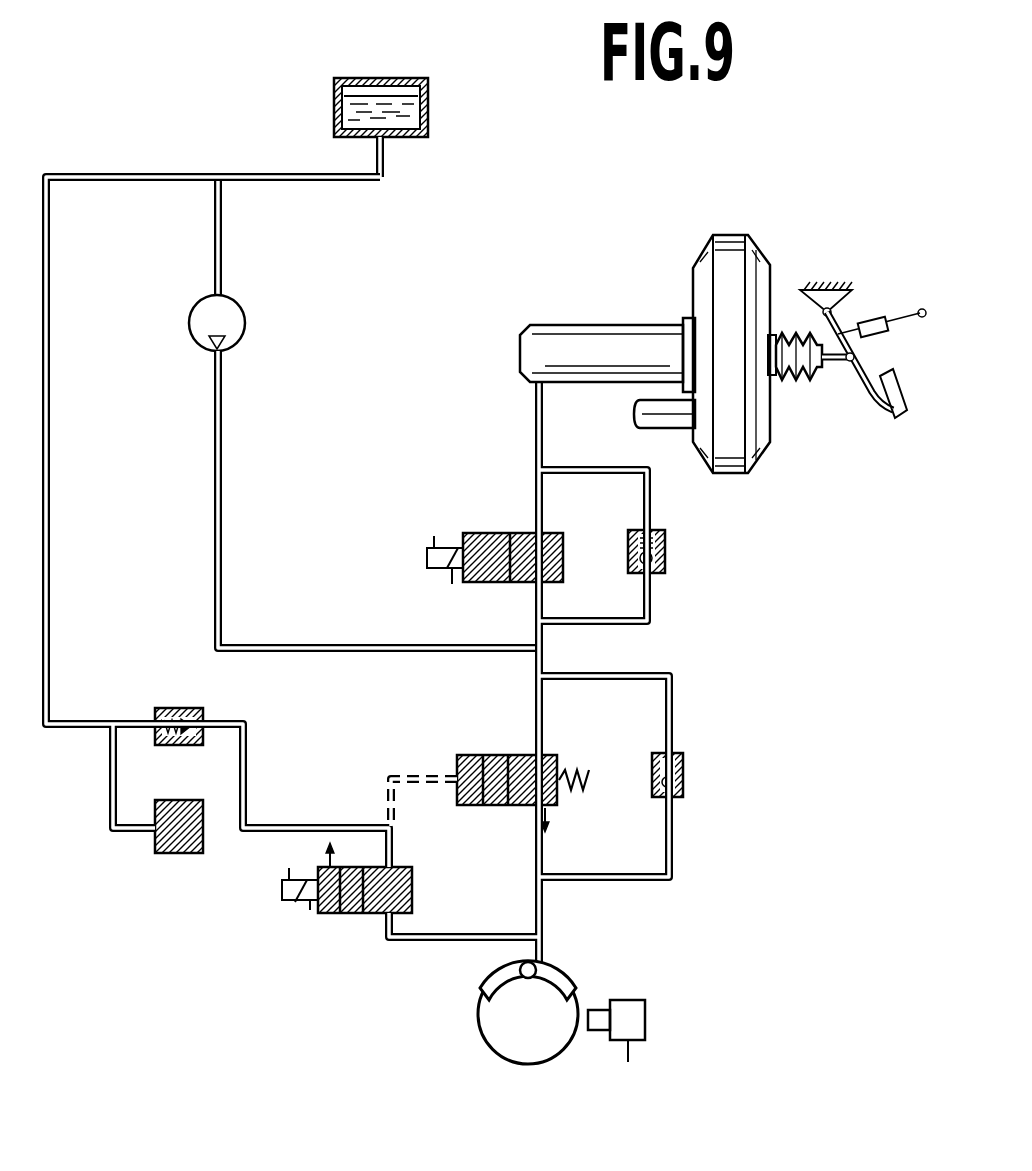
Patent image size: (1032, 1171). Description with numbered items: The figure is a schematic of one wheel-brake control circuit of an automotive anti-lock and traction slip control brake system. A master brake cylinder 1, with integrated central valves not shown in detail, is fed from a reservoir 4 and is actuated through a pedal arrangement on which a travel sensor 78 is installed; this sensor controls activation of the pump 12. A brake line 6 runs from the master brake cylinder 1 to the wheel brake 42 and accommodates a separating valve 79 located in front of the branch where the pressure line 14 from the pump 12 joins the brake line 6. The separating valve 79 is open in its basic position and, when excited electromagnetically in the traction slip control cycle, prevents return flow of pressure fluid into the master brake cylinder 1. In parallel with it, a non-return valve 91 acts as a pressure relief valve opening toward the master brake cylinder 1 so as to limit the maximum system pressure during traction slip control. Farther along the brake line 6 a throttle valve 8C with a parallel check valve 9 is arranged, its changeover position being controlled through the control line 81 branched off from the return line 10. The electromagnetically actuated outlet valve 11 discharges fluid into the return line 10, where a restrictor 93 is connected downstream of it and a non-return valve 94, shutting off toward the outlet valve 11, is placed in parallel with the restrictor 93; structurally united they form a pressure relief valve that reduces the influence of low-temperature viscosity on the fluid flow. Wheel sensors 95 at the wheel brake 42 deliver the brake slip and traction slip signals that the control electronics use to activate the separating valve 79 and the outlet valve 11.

The master brake cylinder 1 is at (614, 320).
The brake fluid reservoir 4 is at (429, 100).
The brake line 6 is at (533, 492).
The pressure control valve 8C is at (553, 757).
The check valve 9 is at (684, 770).
The return line 10 is at (93, 722).
The outlet valve 11 is at (328, 916).
The pump 12 is at (234, 325).
The pressure line 14 is at (300, 648).
The wheel brake 42 is at (546, 972).
The travel sensor 78 is at (876, 319).
The separating valve 79 is at (472, 533).
The control line 81 is at (399, 776).
The non-return valve 91 is at (666, 550).
The restrictor 93 is at (176, 802).
The non-return valve 94 is at (176, 709).
The wheel sensors 95 is at (645, 1020).